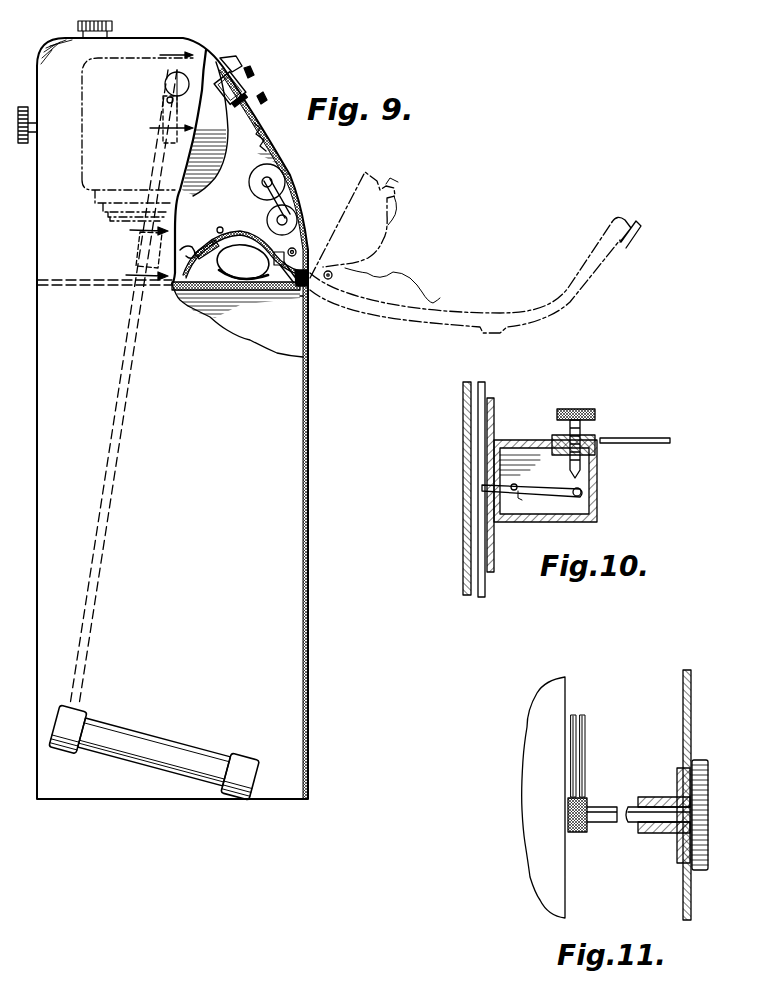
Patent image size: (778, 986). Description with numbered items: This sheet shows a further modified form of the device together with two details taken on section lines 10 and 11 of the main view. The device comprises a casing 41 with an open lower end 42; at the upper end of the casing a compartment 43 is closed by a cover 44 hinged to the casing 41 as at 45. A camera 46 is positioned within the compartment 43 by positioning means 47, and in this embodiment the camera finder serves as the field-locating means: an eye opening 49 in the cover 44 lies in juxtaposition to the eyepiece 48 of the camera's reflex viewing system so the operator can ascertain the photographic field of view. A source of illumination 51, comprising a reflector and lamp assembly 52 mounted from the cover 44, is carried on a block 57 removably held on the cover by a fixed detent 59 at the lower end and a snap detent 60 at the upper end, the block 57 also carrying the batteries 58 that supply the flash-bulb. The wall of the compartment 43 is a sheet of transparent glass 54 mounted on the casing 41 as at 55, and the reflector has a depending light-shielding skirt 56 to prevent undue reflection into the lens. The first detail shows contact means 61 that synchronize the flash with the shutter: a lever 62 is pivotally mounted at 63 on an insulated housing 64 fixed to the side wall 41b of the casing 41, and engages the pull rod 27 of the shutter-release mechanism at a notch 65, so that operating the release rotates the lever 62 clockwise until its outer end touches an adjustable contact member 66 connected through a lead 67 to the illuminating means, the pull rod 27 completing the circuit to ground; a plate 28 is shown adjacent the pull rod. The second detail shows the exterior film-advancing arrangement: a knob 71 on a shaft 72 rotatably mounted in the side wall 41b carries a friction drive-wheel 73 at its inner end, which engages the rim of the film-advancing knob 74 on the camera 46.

In FIG. 9, the section line 10 is at (132, 254).
In FIG. 9, the section line 11 is at (164, 93).
In FIG. 10, the pull rod 27 is at (487, 580).
In FIG. 10, the plate 28 is at (495, 550).
In FIG. 9, the casing 41 is at (309, 434).
In FIG. 10, the side wall 41b is at (463, 540).
In FIG. 11, the side wall 41b is at (692, 886).
In FIG. 9, the open lower end 42 is at (123, 812).
In FIG. 9, the compartment 43 is at (235, 205).
In FIG. 9, the cover 44 is at (590, 273).
In FIG. 9, the hinge 45 is at (290, 287).
In FIG. 9, the camera 46 is at (97, 174).
In FIG. 11, the camera 46 is at (522, 739).
In FIG. 9, the positioning means 47 is at (32, 142).
In FIG. 9, the eyepiece 48 is at (228, 76).
In FIG. 9, the eye opening 49 is at (248, 80).
In FIG. 9, the source of illumination 51 is at (243, 262).
In FIG. 9, the reflector and lamp assembly 52 is at (214, 243).
In FIG. 9, the sheet of transparent glass 54 is at (208, 290).
In FIG. 9, the mounting 55 is at (327, 322).
In FIG. 9, the light-shielding skirt 56 is at (171, 300).
In FIG. 9, the block 57 is at (300, 236).
In FIG. 9, the batteries 58 is at (271, 214).
In FIG. 9, the fixed detent 59 is at (299, 252).
In FIG. 9, the snap detent 60 is at (258, 147).
In FIG. 9, the contact means 61 is at (175, 250).
In FIG. 10, the contact means 61 is at (590, 512).
In FIG. 10, the lever 62 is at (548, 478).
In FIG. 10, the pivot 63 is at (529, 501).
In FIG. 10, the insulated housing 64 is at (592, 492).
In FIG. 10, the notch 65 is at (482, 486).
In FIG. 10, the adjustable contact member 66 is at (598, 470).
In FIG. 9, the lead 67 is at (190, 251).
In FIG. 9, the knob 71 is at (163, 84).
In FIG. 11, the knob 71 is at (710, 804).
In FIG. 11, the shaft 72 is at (632, 824).
In FIG. 11, the friction drive-wheel 73 is at (578, 832).
In FIG. 11, the film-advancing knob 74 is at (586, 765).